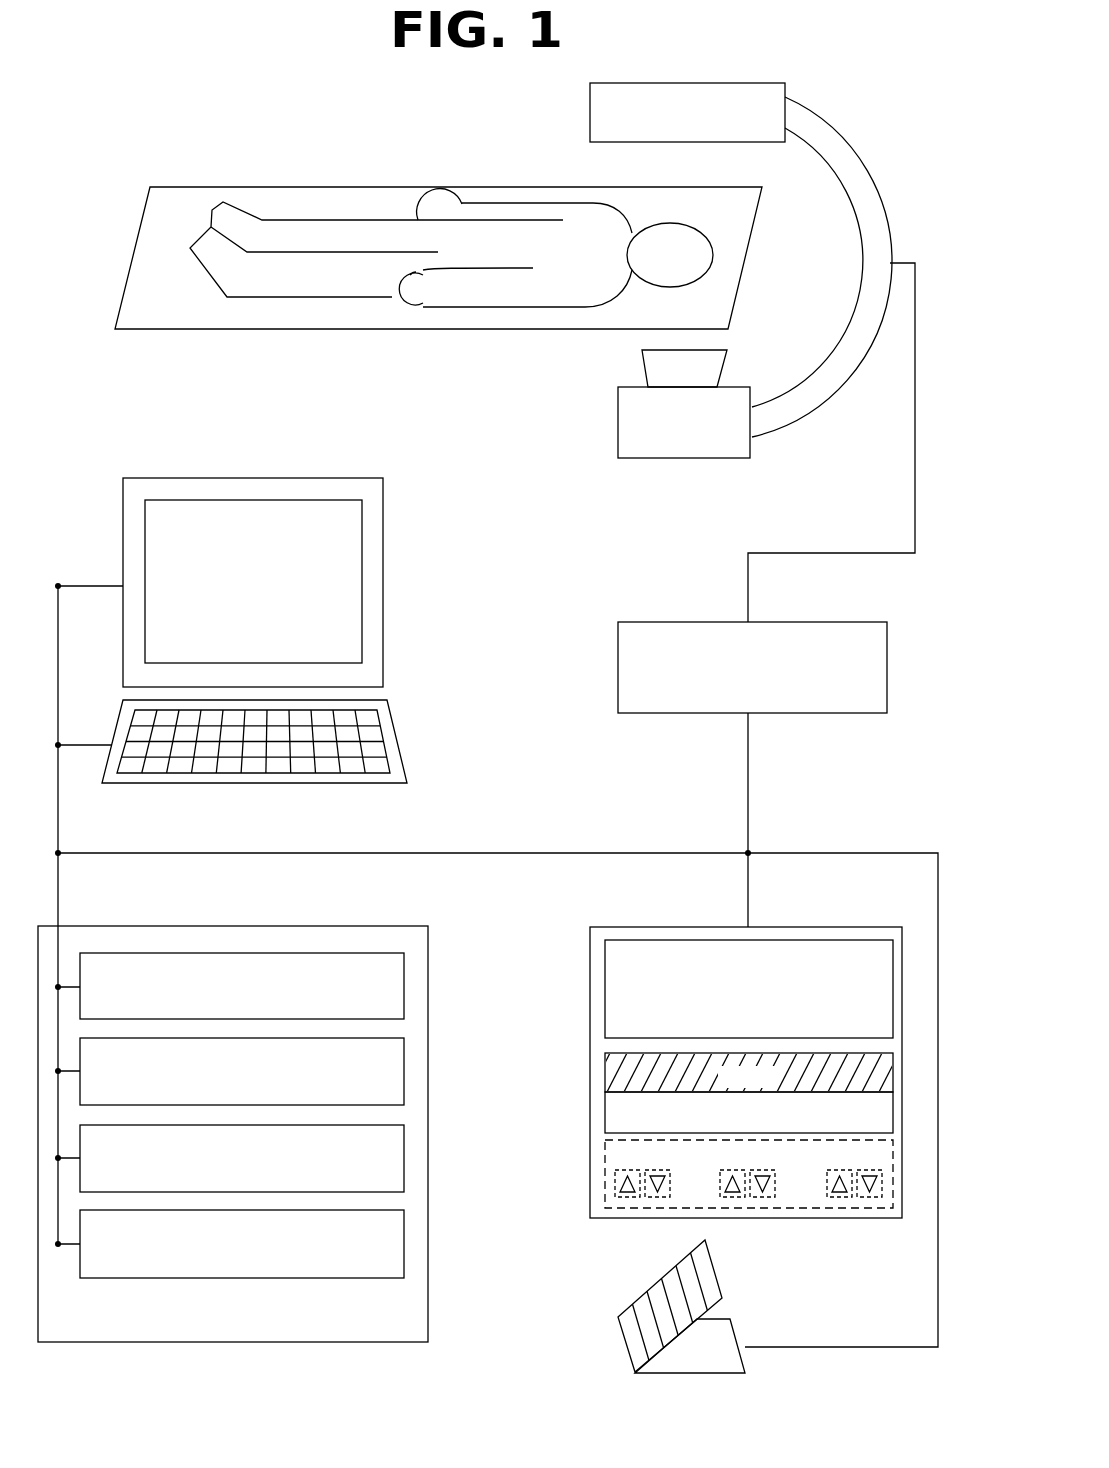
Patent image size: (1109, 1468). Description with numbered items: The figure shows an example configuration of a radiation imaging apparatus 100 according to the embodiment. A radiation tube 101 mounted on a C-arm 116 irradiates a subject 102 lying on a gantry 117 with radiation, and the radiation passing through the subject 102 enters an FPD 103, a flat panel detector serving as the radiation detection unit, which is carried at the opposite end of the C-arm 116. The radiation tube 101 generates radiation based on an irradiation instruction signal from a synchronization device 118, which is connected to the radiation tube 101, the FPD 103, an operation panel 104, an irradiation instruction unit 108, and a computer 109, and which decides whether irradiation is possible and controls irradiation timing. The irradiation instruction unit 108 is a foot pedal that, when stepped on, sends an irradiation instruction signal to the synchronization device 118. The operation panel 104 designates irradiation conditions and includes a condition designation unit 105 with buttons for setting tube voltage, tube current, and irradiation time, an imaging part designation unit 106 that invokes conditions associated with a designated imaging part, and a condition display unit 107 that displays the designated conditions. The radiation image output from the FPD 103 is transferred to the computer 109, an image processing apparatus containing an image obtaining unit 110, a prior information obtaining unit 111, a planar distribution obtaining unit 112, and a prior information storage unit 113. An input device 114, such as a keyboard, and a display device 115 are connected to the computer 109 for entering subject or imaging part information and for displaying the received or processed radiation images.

The radiation imaging apparatus 100 is at (158, 112).
The radiation tube 101 is at (618, 416).
The subject 102 is at (345, 200).
The FPD 103 is at (590, 101).
The operation panel 104 is at (875, 927).
The condition designation unit 105 is at (605, 1176).
The imaging part designation unit 106 is at (605, 1078).
The condition display unit 107 is at (605, 989).
The irradiation instruction unit 108 is at (618, 1320).
The computer 109 is at (398, 926).
The image obtaining unit 110 is at (404, 968).
The prior information obtaining unit 111 is at (404, 1066).
The planar distribution obtaining unit 112 is at (404, 1152).
The prior information storage unit 113 is at (404, 1238).
The input device 114 is at (398, 718).
The display device 115 is at (383, 505).
The C-arm 116 is at (848, 132).
The gantry 117 is at (258, 187).
The synchronization device 118 is at (618, 647).